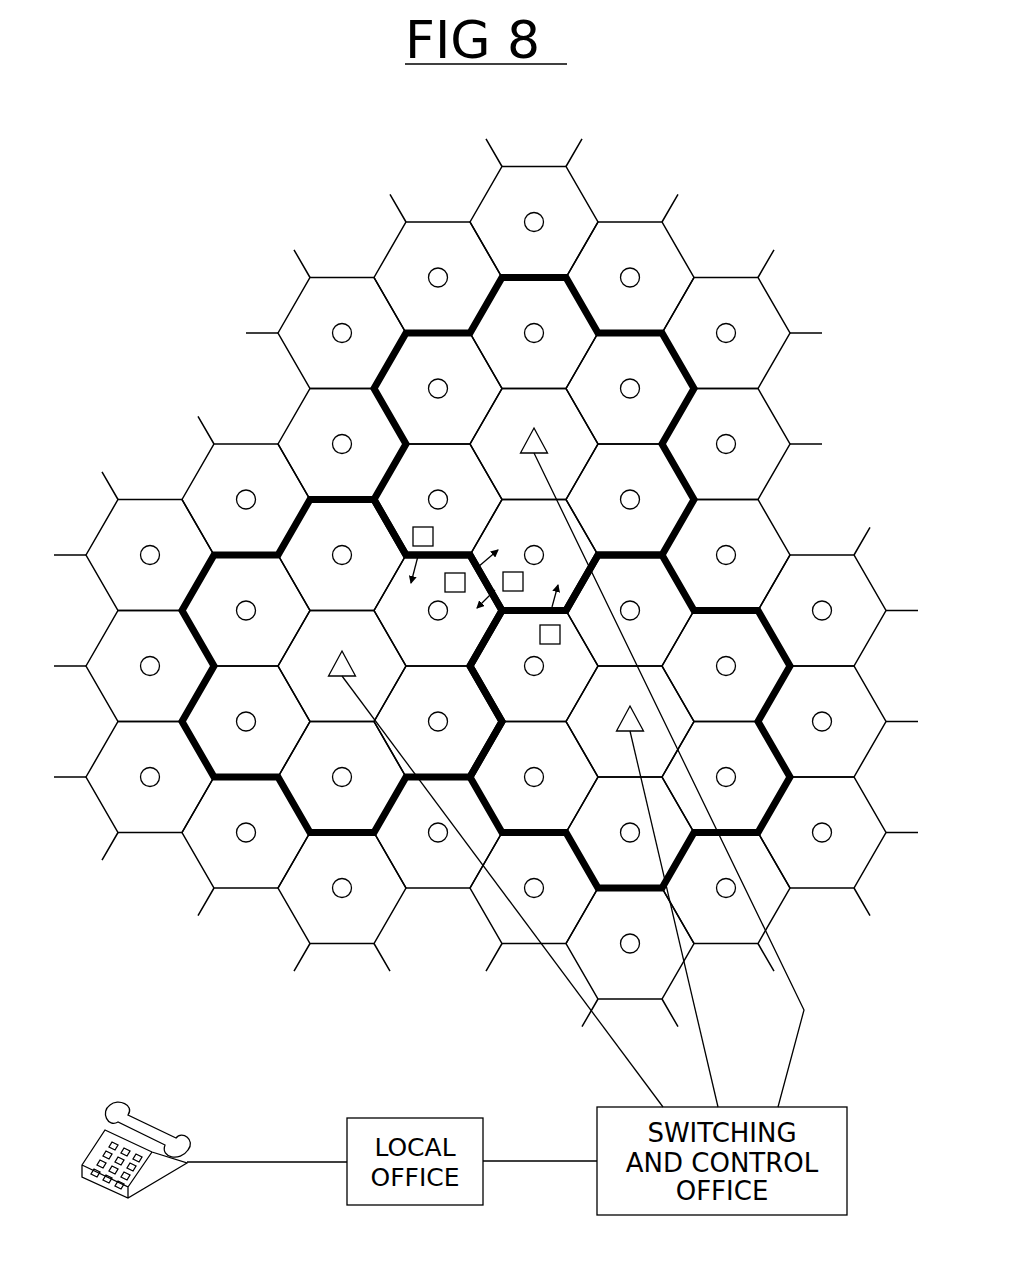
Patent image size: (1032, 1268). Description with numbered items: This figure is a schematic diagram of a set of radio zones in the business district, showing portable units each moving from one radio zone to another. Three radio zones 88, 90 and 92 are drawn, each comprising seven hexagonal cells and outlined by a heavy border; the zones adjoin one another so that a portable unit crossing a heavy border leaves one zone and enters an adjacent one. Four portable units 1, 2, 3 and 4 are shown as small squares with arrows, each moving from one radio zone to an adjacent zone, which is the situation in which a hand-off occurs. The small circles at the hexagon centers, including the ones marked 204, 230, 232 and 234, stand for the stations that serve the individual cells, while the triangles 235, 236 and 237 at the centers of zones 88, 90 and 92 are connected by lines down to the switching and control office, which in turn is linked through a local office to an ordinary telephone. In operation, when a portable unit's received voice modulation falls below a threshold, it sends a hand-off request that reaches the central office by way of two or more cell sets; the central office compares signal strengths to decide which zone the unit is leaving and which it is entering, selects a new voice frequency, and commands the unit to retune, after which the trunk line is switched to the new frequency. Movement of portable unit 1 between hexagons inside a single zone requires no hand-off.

The radio zone 88 is at (375, 371).
The radio zone 90 is at (283, 536).
The radio zone 92 is at (688, 589).
The base station 204 is at (527, 660).
The base station 230 is at (430, 603).
The base station 232 is at (530, 546).
The base station 234 is at (430, 492).
The cluster control station 235 is at (335, 663).
The cluster control station 236 is at (543, 442).
The cluster control station 237 is at (625, 718).
The portable unit 1 is at (445, 583).
The portable unit 2 is at (523, 582).
The portable unit 3 is at (433, 536).
The portable unit 4 is at (540, 634).